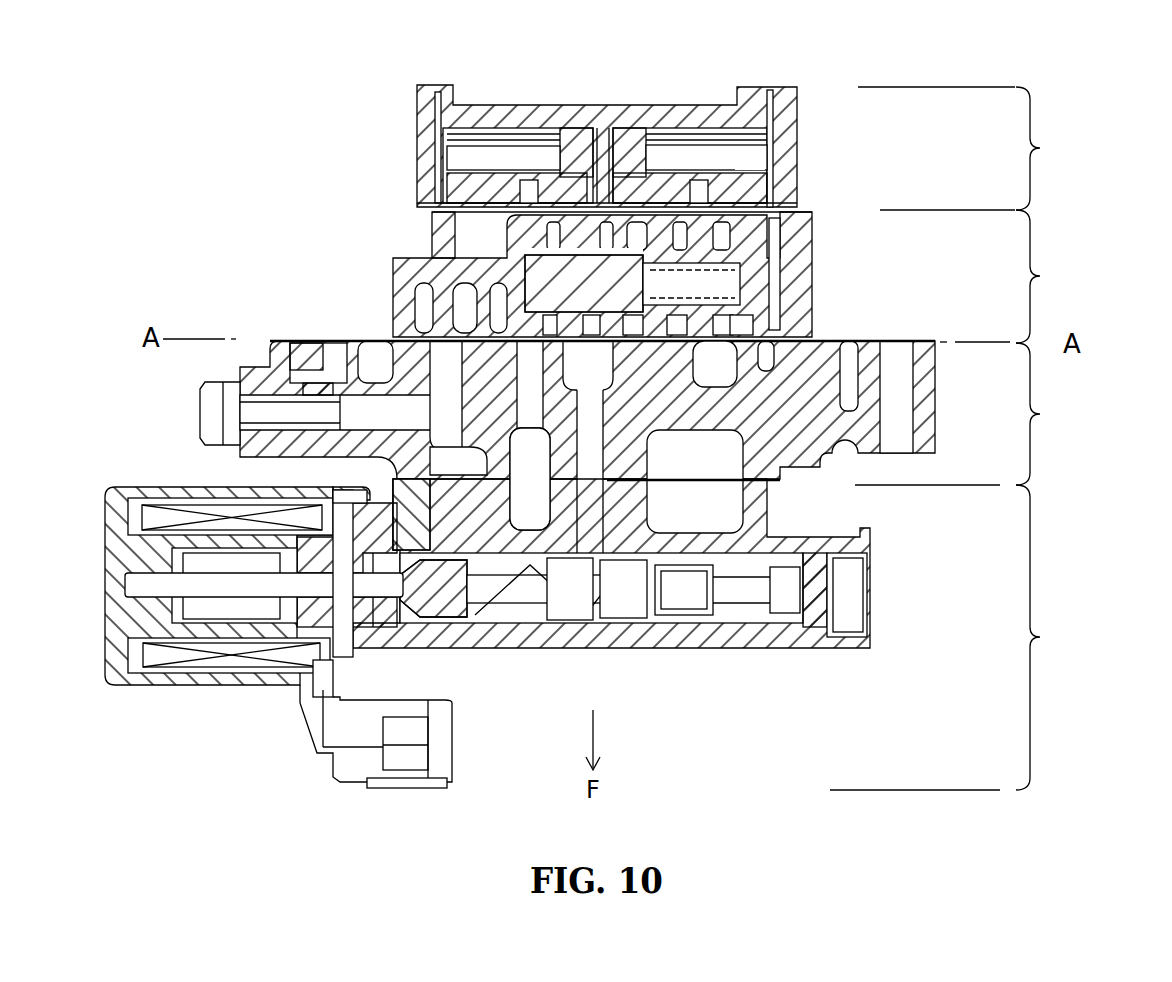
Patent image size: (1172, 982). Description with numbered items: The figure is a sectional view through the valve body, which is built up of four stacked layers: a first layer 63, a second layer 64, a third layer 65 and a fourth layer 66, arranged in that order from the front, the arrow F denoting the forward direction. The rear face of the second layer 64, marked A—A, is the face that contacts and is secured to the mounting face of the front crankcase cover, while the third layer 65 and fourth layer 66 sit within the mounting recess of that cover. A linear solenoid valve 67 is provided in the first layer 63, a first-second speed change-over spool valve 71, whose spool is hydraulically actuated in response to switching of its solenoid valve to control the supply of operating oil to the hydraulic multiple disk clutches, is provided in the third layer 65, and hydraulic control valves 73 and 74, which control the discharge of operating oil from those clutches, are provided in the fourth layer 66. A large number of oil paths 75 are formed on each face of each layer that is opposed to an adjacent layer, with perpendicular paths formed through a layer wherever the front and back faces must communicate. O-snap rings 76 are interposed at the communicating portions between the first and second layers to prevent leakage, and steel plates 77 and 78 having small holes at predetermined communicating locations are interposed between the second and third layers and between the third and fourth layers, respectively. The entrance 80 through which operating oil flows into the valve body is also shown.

The first layer 63 is at (994, 637).
The second layer 64 is at (1006, 414).
The third layer 65 is at (1019, 276).
The fourth layer 66 is at (1008, 148).
The linear solenoid valve 67 is at (660, 643).
The first-second speed change-over spool valve 71 is at (748, 250).
The hydraulic control valve 73 is at (583, 130).
The hydraulic control valve 74 is at (647, 130).
The oil paths 75 is at (700, 205).
The O-snap rings 76 is at (565, 628).
The plate 77 is at (393, 335).
The plate 78 is at (422, 213).
The entrance 80 is at (316, 355).